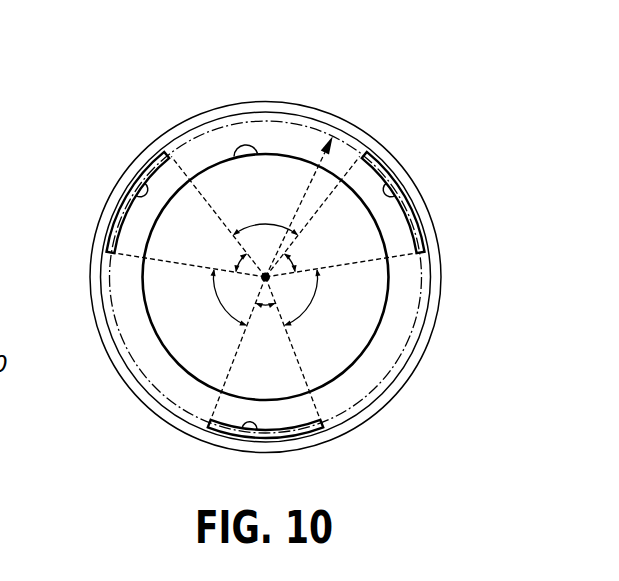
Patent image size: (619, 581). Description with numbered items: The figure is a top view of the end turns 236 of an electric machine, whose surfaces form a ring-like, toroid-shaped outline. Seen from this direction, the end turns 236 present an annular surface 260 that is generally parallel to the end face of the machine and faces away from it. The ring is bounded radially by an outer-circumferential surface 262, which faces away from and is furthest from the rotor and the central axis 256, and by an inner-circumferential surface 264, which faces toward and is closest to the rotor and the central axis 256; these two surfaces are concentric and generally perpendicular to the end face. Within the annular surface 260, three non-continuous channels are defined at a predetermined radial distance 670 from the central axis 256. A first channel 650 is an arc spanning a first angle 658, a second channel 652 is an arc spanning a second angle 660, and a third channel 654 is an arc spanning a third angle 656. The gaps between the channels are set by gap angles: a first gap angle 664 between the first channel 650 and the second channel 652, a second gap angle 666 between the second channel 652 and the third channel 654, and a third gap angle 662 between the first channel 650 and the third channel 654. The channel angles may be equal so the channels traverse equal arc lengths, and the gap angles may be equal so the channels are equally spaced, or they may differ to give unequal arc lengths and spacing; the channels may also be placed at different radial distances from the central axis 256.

The end turns 236 is at (363, 65).
The central axis 256 is at (262, 282).
The annular surface 260 is at (268, 123).
The outer-circumferential surface 262 is at (370, 135).
The inner-circumferential surface 264 is at (225, 158).
The first channel 650 is at (136, 193).
The second channel 652 is at (258, 436).
The third channel 654 is at (405, 193).
The third angle 656 is at (288, 257).
The first angle 658 is at (243, 257).
The second angle 660 is at (259, 307).
The third gap angle 662 is at (268, 224).
The first gap angle 664 is at (221, 304).
The second gap angle 666 is at (309, 305).
The predetermined radial distance 670 is at (311, 194).